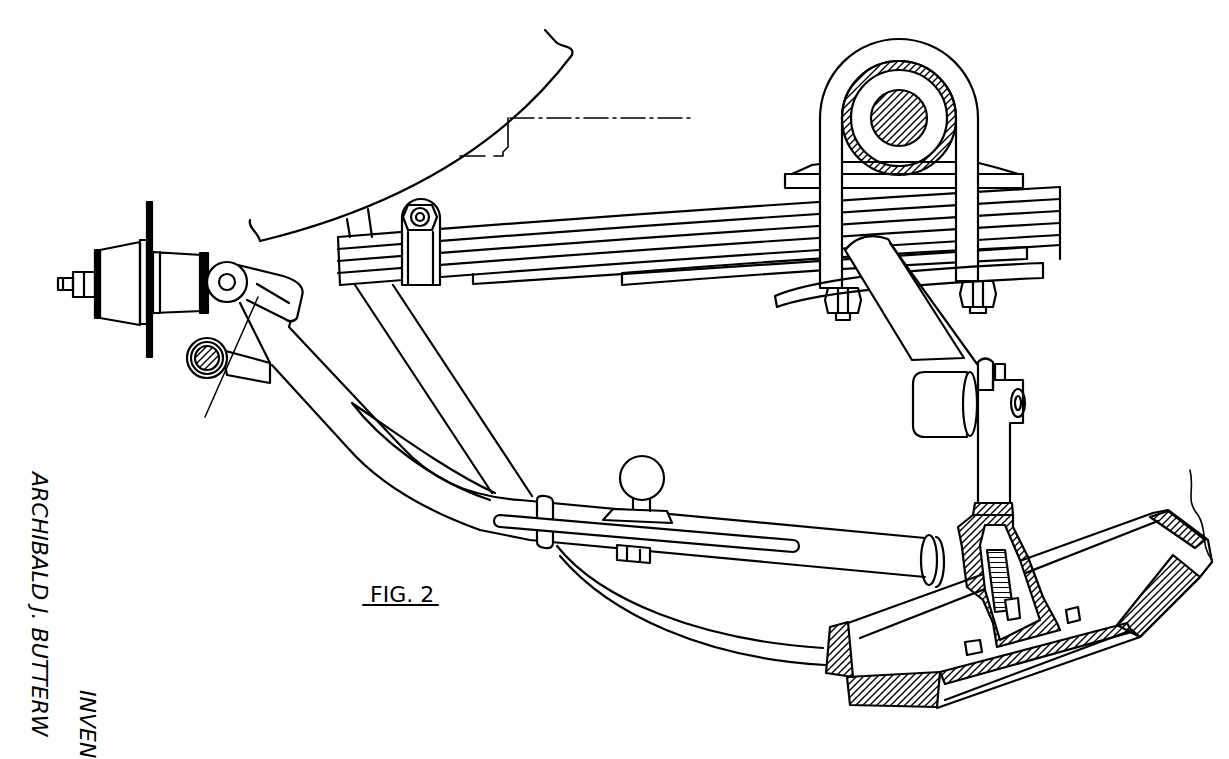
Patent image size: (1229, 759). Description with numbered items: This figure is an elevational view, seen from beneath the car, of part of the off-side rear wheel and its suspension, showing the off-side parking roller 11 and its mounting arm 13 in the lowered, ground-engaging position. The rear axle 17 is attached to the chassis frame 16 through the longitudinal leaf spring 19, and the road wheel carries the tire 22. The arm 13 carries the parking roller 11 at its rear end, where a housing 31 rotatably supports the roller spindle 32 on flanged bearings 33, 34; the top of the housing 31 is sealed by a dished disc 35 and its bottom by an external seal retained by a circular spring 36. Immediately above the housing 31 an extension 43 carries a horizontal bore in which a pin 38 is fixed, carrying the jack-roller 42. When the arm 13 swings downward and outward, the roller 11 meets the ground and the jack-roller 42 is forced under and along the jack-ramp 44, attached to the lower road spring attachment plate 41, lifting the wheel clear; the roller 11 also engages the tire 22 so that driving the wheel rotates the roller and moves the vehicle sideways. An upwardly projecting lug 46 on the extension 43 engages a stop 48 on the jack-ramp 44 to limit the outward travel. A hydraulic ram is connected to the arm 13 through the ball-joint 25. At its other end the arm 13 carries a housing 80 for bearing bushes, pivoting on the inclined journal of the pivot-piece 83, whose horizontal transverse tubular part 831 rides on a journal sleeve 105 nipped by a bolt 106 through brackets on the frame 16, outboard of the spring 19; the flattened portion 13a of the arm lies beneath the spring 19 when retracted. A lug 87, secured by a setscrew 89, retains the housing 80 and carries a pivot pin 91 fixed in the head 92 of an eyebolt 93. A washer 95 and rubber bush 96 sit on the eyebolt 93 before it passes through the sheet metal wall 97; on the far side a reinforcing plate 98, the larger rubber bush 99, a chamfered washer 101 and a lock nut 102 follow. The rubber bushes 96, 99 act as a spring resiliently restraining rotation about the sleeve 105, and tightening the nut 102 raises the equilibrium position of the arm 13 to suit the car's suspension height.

The parking roller 11 is at (827, 670).
The arm 13 is at (802, 527).
The flattened portion 13a is at (398, 444).
The chassis frame 16 is at (513, 76).
The rear axle 17 is at (950, 112).
The leaf spring 19 is at (617, 232).
The tire 22 is at (677, 607).
The ball-joint 25 is at (657, 482).
The housing 31 is at (1040, 584).
The spindle 32 is at (1025, 598).
The flanged bearing 33 is at (1015, 522).
The flanged bearing 34 is at (965, 645).
The dished disc 35 is at (975, 510).
The circular spring 36 is at (1073, 618).
The pin 38 is at (1026, 404).
The lower road spring attachment plate 41 is at (803, 298).
The jack-roller 42 is at (913, 402).
The extension 43 is at (1006, 458).
The jack-ramp 44 is at (903, 333).
The lug 46 is at (990, 360).
The stop 48 is at (1005, 375).
The housing 80 is at (238, 334).
The pivot-piece 83 is at (230, 377).
The horizontal transverse tubular part 831 is at (215, 361).
The lug 87 is at (260, 284).
The setscrew 89 is at (297, 288).
The pivot pin 91 is at (233, 279).
The head 92 is at (214, 266).
The eyebolt 93 is at (74, 279).
The washer 95 is at (200, 312).
The rubber bush 96 is at (167, 311).
The sheet metal wall 97 is at (150, 227).
The reinforcing plate 98 is at (143, 241).
The rubber bush 99 is at (121, 319).
The chamfered washer 101 is at (100, 319).
The lock nut 102 is at (77, 291).
The journal sleeve 105 is at (207, 373).
The bolt 106 is at (193, 364).